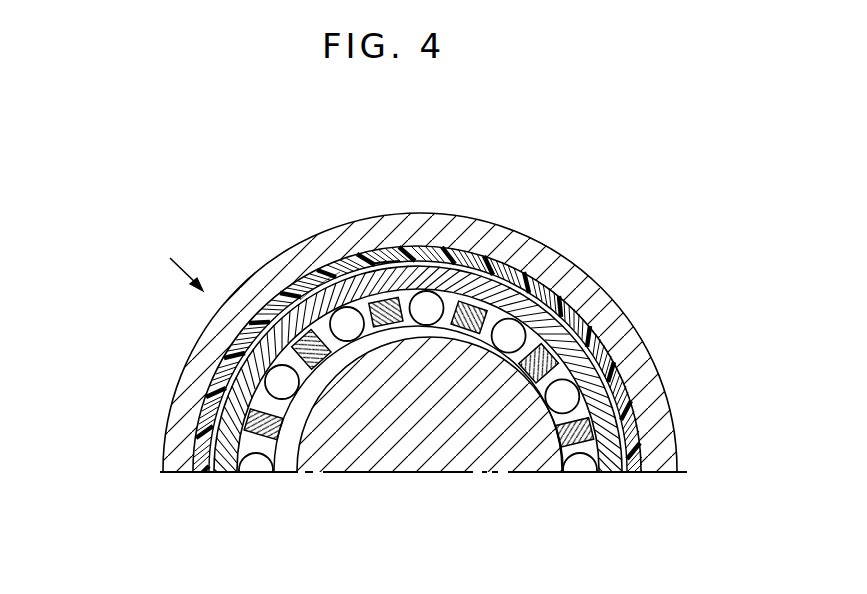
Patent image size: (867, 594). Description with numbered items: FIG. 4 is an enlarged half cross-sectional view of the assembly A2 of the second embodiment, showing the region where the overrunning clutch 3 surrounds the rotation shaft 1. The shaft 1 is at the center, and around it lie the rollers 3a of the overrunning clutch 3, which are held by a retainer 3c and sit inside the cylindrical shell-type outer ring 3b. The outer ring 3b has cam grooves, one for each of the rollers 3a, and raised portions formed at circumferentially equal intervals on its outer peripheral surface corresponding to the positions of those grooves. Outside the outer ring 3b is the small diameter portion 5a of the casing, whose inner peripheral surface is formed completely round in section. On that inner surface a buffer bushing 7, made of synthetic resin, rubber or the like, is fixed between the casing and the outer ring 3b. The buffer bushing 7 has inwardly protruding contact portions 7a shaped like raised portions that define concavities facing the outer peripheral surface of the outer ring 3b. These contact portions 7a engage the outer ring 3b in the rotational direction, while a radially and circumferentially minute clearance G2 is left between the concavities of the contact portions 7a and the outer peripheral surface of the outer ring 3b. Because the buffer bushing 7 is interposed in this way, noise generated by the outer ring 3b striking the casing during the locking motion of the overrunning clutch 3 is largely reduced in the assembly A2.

The rotation shaft 1 is at (393, 452).
The overrunning clutch 3 is at (455, 370).
The rollers 3a is at (488, 223).
The outer ring 3b is at (426, 348).
The retainer 3c is at (565, 330).
The small diameter portion 5a is at (198, 372).
The buffer bushing 7 is at (262, 317).
The contact portions 7a is at (390, 257).
The clearance G2 is at (322, 283).
The assembly A2 is at (169, 262).